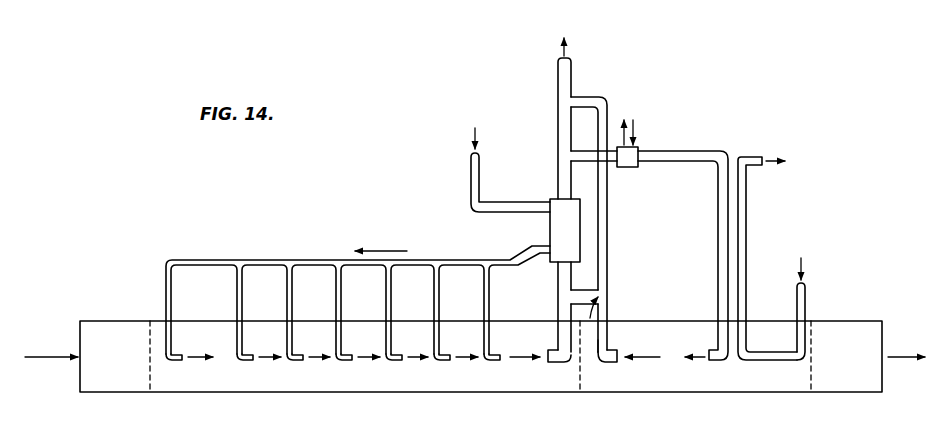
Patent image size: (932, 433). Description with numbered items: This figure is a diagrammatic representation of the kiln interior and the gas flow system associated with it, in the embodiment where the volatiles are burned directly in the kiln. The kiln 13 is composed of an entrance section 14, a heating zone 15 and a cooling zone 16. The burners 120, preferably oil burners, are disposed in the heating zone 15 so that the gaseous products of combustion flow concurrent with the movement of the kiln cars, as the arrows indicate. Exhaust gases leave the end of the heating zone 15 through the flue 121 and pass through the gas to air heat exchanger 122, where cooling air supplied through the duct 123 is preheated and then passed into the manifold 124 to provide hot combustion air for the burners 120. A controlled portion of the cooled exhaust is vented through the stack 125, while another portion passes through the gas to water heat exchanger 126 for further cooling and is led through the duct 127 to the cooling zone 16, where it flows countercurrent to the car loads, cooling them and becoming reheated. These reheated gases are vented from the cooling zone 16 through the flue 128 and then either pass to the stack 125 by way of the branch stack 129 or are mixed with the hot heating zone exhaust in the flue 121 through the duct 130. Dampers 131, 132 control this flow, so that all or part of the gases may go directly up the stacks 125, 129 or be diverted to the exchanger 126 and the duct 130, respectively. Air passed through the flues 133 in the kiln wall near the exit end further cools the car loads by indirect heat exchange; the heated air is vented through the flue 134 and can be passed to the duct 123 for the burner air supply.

The kiln 13 is at (370, 393).
The entrance section 14 is at (104, 326).
The heating zone 15 is at (470, 381).
The cooling zone 16 is at (690, 382).
The burners 120 is at (238, 363).
The flue 121 is at (557, 364).
The gas to air heat exchanger 122 is at (550, 234).
The duct 123 is at (520, 192).
The manifold 124 is at (288, 258).
The stack 125 is at (558, 70).
The gas to water heat exchanger 126 is at (640, 150).
The duct 127 is at (718, 240).
The flue 128 is at (607, 346).
The branch stack 129 is at (607, 218).
The duct 130 is at (571, 287).
The damper 131 is at (563, 156).
The damper 132 is at (604, 277).
The flues 133 is at (797, 336).
The flue 134 is at (749, 156).